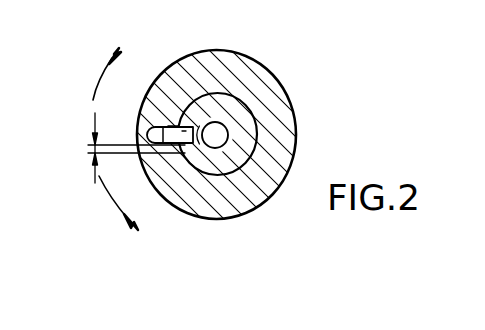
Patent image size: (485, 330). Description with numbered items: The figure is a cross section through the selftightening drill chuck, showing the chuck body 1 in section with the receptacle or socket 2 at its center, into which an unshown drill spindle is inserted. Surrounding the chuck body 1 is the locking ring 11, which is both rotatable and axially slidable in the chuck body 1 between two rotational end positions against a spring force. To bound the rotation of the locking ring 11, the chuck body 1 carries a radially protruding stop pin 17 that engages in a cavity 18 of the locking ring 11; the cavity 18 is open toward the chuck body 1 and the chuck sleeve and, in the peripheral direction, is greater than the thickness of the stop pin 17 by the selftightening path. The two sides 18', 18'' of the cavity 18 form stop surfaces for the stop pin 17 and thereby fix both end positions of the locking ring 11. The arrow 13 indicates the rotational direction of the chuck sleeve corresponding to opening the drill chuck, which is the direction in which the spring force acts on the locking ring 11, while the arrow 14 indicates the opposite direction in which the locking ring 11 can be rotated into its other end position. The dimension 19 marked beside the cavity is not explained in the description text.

The chuck body 1 is at (262, 68).
The receptacle or socket 2 is at (221, 128).
The locking ring 11 is at (279, 136).
The arrow 13 is at (112, 208).
The arrow 14 is at (106, 72).
The stop pin 17 is at (183, 113).
The cavity 18 is at (159, 203).
The side of the cavity 18' is at (177, 203).
The side of the cavity 18'' is at (168, 66).
The slot width dimension 19 is at (88, 147).